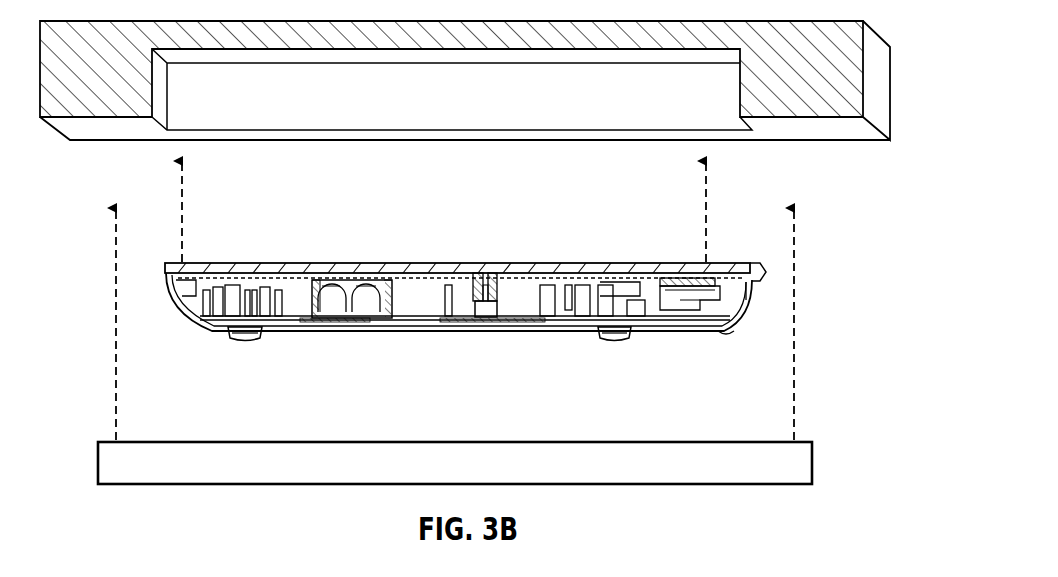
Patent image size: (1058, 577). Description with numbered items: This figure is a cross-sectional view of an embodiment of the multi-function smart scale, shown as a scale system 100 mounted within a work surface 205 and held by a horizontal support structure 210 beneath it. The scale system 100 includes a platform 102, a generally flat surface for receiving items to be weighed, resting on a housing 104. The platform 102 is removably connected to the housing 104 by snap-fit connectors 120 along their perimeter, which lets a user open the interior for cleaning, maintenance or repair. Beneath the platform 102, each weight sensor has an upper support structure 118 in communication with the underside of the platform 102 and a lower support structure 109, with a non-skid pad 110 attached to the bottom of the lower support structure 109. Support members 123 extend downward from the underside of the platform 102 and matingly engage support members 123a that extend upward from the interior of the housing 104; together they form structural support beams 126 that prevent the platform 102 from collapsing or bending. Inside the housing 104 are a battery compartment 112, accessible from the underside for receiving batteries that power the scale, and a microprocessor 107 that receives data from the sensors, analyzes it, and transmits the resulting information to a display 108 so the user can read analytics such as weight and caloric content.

The scale system 100 is at (288, 184).
The platform 102 is at (342, 268).
The housing 104 is at (418, 322).
The microprocessor 107 is at (682, 306).
The display 108 is at (684, 274).
The lower support structure 109 is at (253, 340).
The non-skid pad 110 is at (237, 341).
The battery compartment 112 is at (360, 322).
The upper support structure 118 is at (243, 276).
The snap-fit connector 120 is at (183, 287).
The support member 123 is at (480, 275).
The support member 123a is at (486, 322).
The structural support beam 126 is at (505, 275).
The work surface 205 is at (878, 92).
The horizontal support structure 210 is at (815, 462).